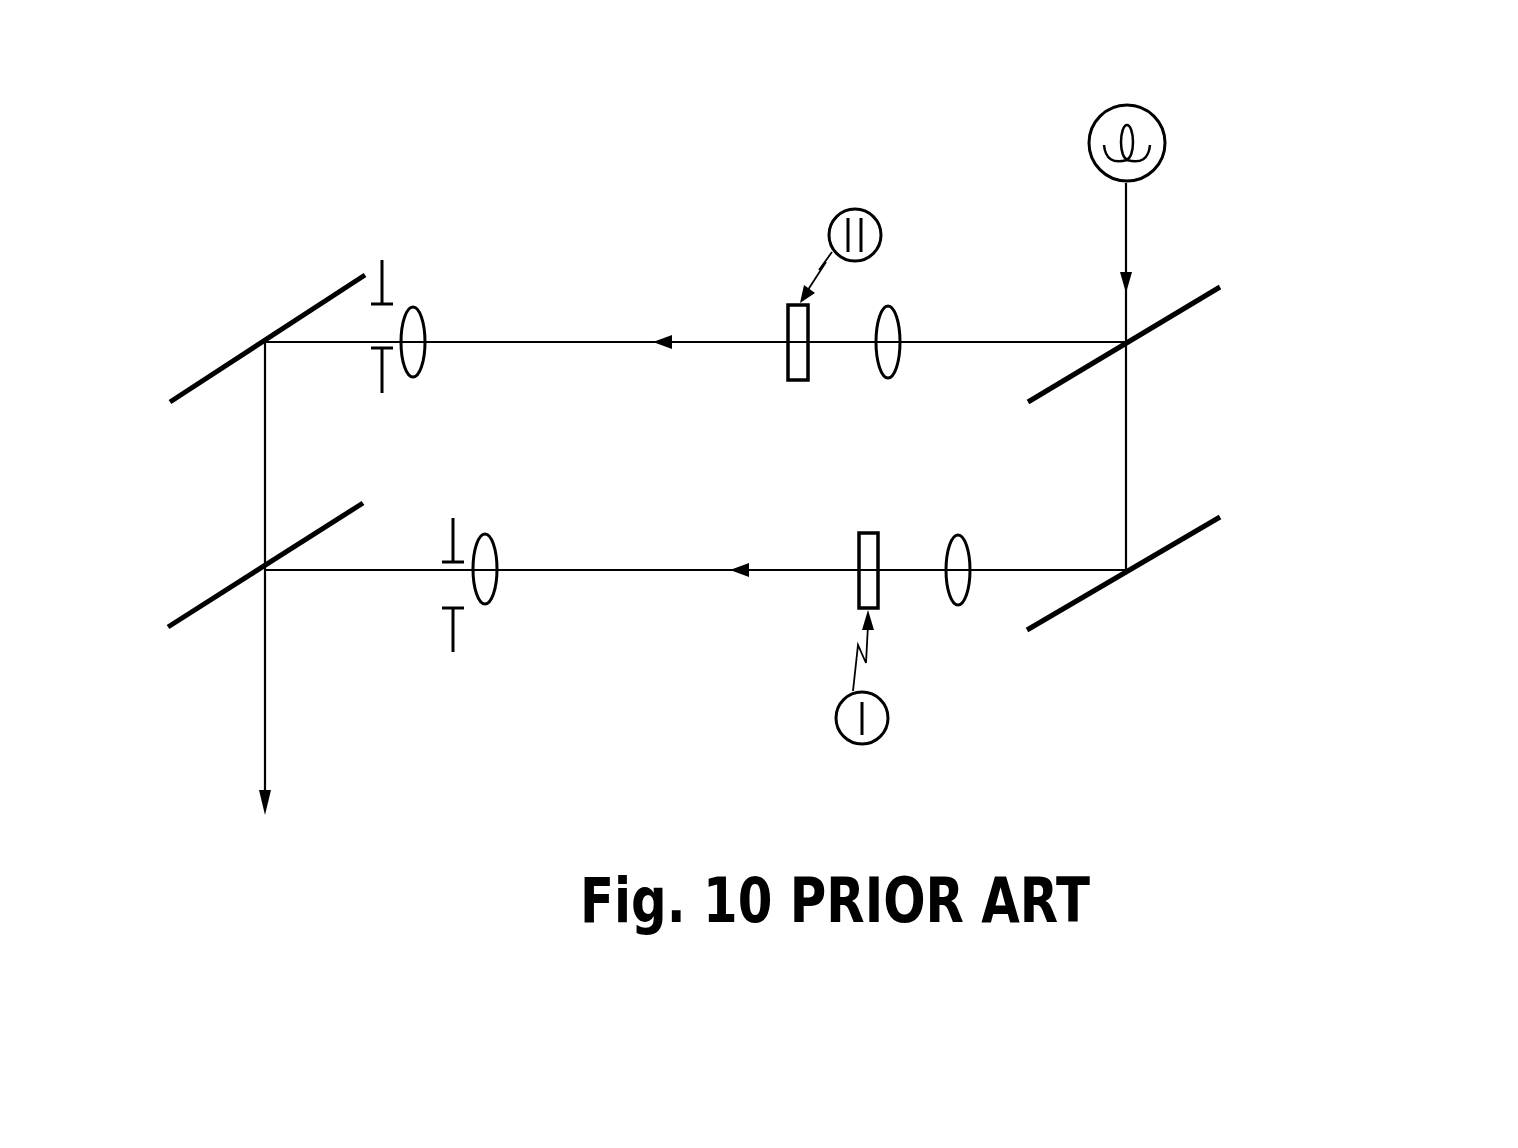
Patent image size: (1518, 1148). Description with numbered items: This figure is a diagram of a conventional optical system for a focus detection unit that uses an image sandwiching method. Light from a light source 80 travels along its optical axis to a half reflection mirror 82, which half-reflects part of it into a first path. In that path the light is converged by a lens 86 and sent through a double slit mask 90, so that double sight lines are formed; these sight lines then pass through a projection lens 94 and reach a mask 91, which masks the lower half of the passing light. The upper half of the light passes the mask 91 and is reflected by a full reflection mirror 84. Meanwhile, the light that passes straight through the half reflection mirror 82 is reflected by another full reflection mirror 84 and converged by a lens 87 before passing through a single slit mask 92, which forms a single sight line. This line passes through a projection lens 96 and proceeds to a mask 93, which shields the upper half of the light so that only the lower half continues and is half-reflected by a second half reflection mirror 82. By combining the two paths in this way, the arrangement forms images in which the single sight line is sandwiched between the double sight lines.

The light source 80 is at (1165, 158).
The half reflection mirror 82 is at (1190, 305).
The full reflection mirror 84 is at (316, 306).
The lens 86 is at (900, 330).
The lens 87 is at (970, 550).
The double slit mask 90 is at (881, 245).
The mask 91 is at (383, 262).
The single slit mask 92 is at (880, 735).
The mask 93 is at (455, 635).
The projection lens 94 is at (421, 316).
The projection lens 96 is at (495, 548).